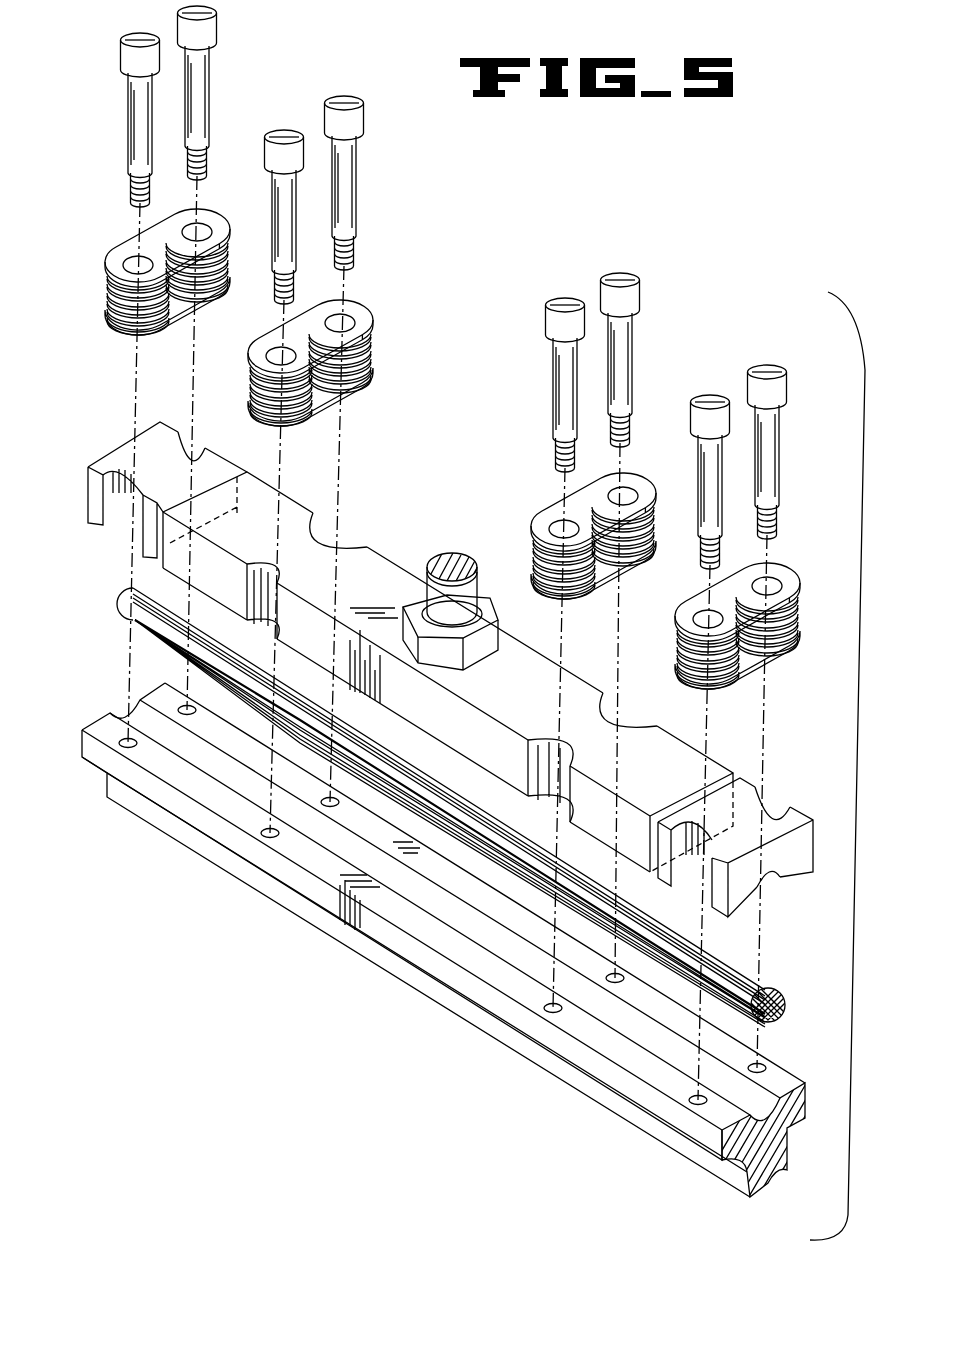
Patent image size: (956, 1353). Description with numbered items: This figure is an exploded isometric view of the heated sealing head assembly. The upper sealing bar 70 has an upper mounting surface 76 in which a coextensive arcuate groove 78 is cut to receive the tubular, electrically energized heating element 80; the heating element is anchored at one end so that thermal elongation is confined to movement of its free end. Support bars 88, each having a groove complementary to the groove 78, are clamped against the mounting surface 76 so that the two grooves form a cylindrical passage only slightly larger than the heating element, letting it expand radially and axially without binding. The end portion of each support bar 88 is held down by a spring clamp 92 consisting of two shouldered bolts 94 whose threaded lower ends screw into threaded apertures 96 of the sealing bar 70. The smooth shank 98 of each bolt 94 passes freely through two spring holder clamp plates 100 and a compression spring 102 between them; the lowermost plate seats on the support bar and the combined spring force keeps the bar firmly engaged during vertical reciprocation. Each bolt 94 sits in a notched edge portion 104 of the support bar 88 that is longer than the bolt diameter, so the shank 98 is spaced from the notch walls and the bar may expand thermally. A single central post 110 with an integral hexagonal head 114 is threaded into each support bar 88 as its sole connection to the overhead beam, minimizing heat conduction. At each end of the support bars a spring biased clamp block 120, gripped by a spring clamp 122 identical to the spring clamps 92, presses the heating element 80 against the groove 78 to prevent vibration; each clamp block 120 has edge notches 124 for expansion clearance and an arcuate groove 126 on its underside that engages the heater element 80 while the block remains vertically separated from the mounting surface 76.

The upper sealing bar 70 is at (482, 944).
The upper mounting surface 76 is at (450, 945).
The arcuate groove 78 is at (425, 900).
The heating element 80 is at (116, 618).
The support bar 88 is at (448, 672).
The spring clamp 92 is at (453, 431).
The shouldered bolt 94 is at (362, 120).
The threaded aperture 96 is at (279, 834).
The smooth shank 98 is at (297, 197).
The spring holder clamp plate 100 is at (374, 313).
The compression spring 102 is at (373, 352).
The notched edge portion 104 is at (318, 520).
The central post 110 is at (455, 553).
The hexagonal head 114 is at (478, 661).
The clamp block 120 is at (455, 666).
The spring clamp 122 is at (106, 264).
The edge notch 124 is at (223, 456).
The arcuate groove 126 is at (773, 882).